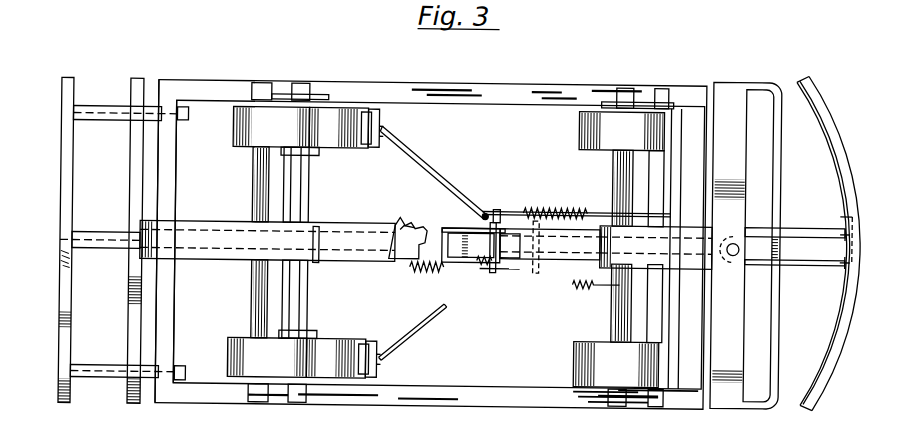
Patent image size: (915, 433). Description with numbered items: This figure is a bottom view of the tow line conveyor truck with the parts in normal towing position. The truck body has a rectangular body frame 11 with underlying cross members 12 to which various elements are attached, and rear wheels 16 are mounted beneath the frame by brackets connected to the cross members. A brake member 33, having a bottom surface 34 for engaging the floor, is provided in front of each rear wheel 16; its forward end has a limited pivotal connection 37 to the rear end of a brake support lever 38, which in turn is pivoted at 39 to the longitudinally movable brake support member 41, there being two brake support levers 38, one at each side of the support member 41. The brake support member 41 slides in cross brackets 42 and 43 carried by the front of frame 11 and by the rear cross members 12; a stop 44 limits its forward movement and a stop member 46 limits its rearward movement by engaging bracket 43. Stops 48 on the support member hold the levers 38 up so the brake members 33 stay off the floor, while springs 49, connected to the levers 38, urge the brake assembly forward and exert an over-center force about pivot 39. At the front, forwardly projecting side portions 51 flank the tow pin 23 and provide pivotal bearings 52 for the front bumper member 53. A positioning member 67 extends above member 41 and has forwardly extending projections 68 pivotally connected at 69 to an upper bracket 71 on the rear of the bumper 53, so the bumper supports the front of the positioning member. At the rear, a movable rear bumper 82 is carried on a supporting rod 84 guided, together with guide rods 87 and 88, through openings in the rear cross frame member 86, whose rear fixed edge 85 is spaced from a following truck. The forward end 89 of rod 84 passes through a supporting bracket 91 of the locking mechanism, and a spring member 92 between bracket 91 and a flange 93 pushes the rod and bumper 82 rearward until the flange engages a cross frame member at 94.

The body frame 11 is at (518, 94).
The cross members 12 is at (260, 84).
The rear wheels 16 is at (273, 127).
The tow pin 23 is at (732, 234).
The brake member 33 is at (338, 149).
The bottom surface 34 is at (350, 121).
The pivotal connection 37 is at (368, 148).
The brake support lever 38 is at (437, 162).
The pivot 39 is at (557, 277).
The brake support member 41 is at (560, 250).
The cross bracket 42 is at (727, 290).
The cross bracket 43 is at (247, 263).
The stop 44 is at (250, 224).
The stop member 46 is at (395, 218).
The stops 48 is at (497, 209).
The springs 49 is at (548, 206).
The forwardly projecting side portions 51 is at (785, 228).
The pivotal bearings 52 is at (833, 210).
The front bumper member 53 is at (830, 135).
The positioning member 67 is at (678, 250).
The forwardly extending projections 68 is at (797, 238).
The pivotal connection 69 is at (850, 245).
The upper bracket 71 is at (857, 210).
The rear bumper 82 is at (60, 174).
The supporting rod 84 is at (118, 239).
The rear fixed edge 85 is at (157, 87).
The rear cross frame member 86 is at (172, 151).
The guide rod 87 is at (110, 113).
The guide rod 88 is at (118, 369).
The forward end 89 is at (518, 277).
The supporting bracket 91 is at (434, 222).
The spring member 92 is at (433, 278).
The flange 93 is at (323, 266).
The stop location 94 is at (310, 183).